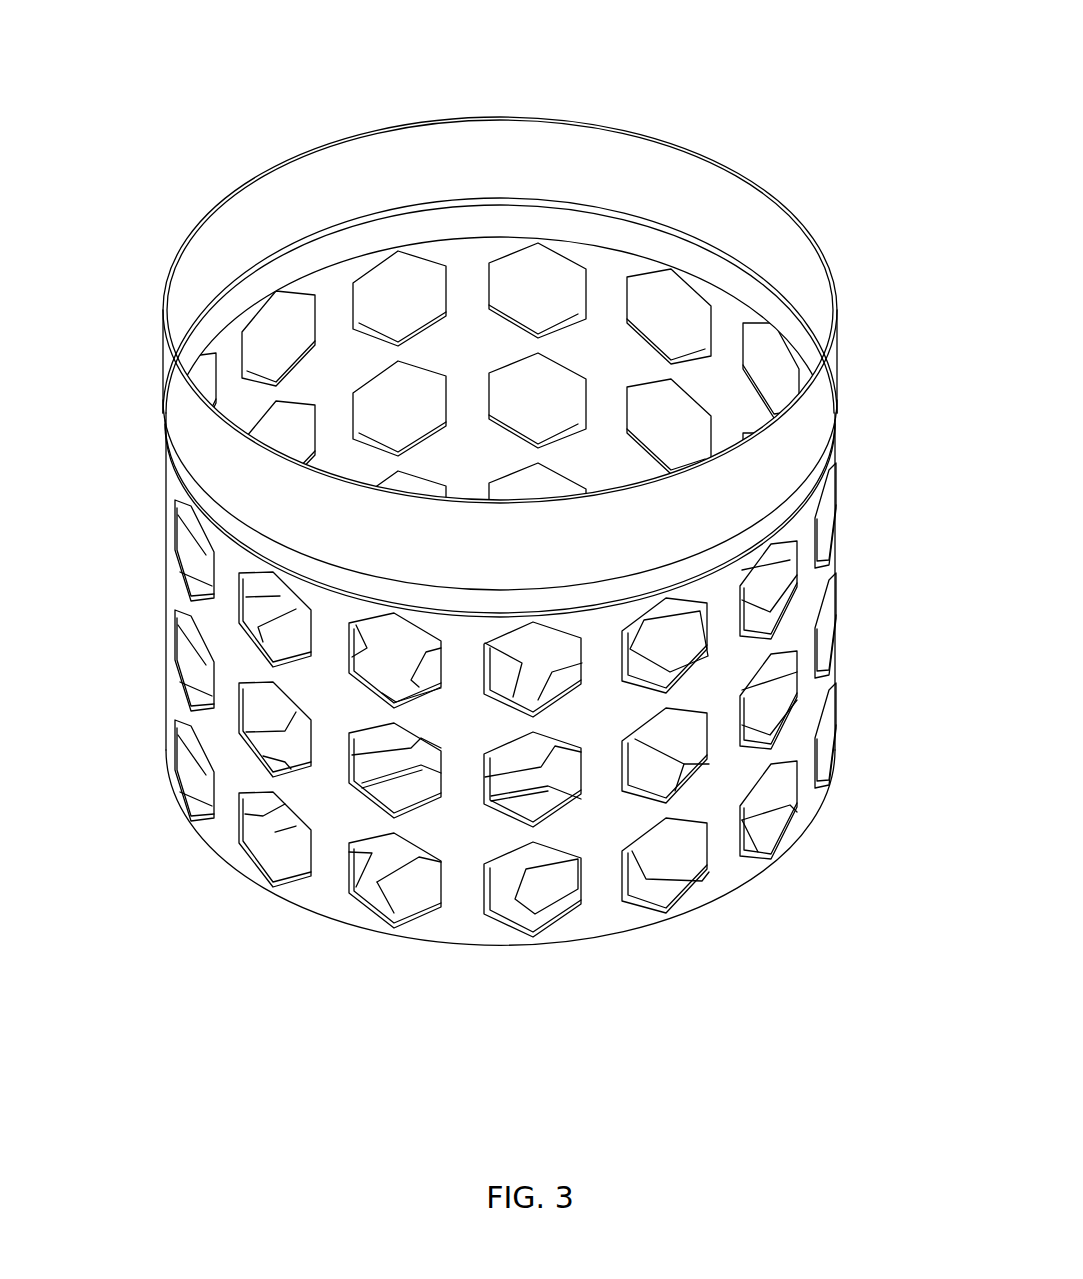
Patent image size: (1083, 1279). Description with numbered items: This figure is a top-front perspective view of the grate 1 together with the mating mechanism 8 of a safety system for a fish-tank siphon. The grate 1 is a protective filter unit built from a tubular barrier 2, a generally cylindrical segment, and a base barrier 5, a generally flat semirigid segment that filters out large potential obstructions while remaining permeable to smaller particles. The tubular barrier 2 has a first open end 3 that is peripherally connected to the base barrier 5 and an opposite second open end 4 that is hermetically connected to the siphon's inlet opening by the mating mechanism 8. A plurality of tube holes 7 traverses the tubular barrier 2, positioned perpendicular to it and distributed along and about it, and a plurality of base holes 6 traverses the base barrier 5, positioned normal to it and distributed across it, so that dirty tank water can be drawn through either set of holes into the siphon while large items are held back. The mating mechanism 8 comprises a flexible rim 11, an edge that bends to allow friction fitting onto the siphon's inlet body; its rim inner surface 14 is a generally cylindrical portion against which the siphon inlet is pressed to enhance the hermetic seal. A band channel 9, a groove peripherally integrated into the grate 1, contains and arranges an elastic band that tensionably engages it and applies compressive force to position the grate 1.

The grate 1 is at (527, 643).
The tubular barrier 2 is at (805, 748).
The first open end 3 is at (484, 756).
The second open end 4 is at (148, 495).
The base barrier 5 is at (507, 910).
The plurality of base holes 6 is at (400, 905).
The plurality of tube holes 7 is at (187, 800).
The mating mechanism 8 is at (552, 301).
The band channel 9 is at (820, 460).
The flexible rim 11 is at (600, 150).
The rim inner surface 14 is at (495, 177).